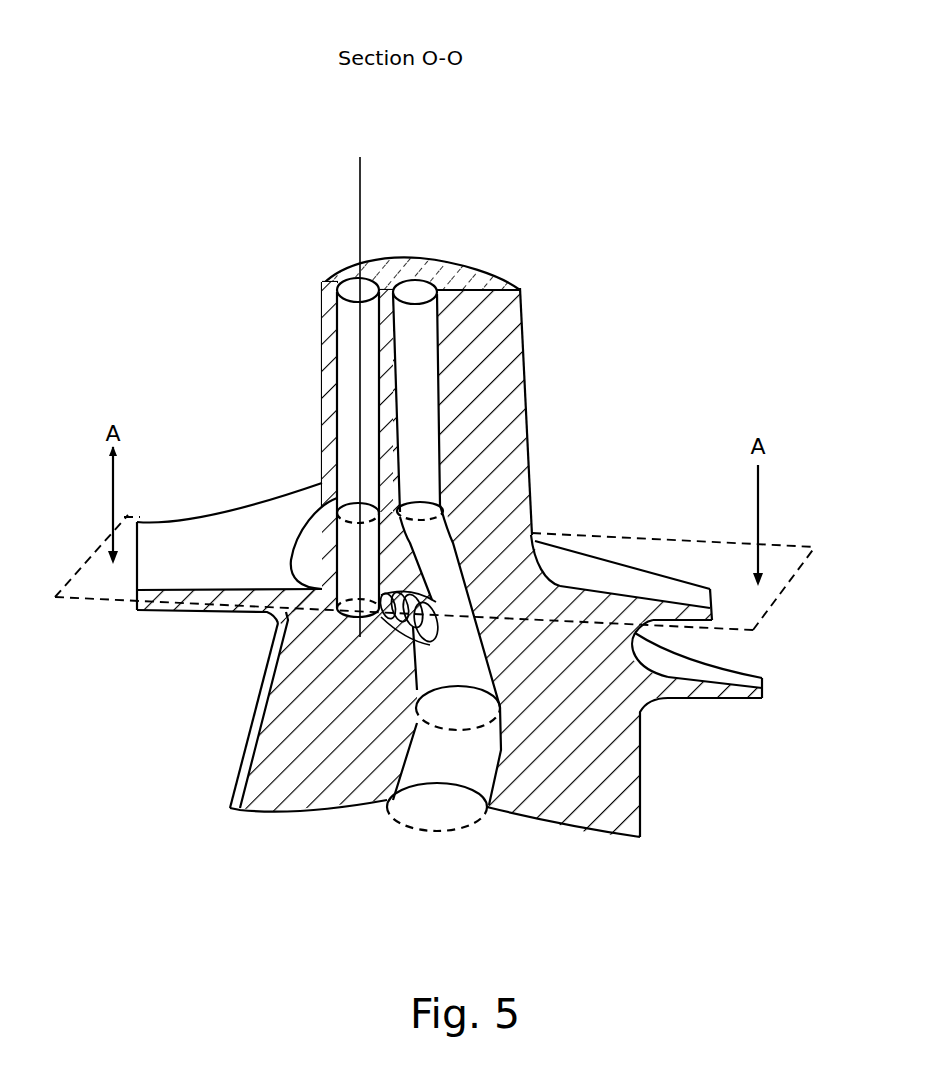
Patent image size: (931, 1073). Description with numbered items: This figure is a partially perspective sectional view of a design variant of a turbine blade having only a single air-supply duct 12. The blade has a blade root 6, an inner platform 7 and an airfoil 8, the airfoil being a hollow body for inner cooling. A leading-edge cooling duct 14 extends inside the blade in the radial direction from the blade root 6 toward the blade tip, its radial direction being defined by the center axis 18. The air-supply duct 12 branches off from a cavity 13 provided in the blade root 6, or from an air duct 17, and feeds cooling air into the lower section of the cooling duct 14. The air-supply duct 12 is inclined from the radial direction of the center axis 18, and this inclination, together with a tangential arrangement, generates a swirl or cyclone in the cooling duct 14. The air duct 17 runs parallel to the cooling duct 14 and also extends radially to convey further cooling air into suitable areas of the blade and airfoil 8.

The blade root 6 is at (573, 797).
The inner platform 7 is at (245, 546).
The airfoil 8 is at (493, 397).
The air-supply duct 12 is at (270, 703).
The cavity 13 is at (470, 665).
The leading-edge cooling duct 14 is at (347, 363).
The air duct 17 is at (422, 362).
The center axis 18 is at (365, 198).